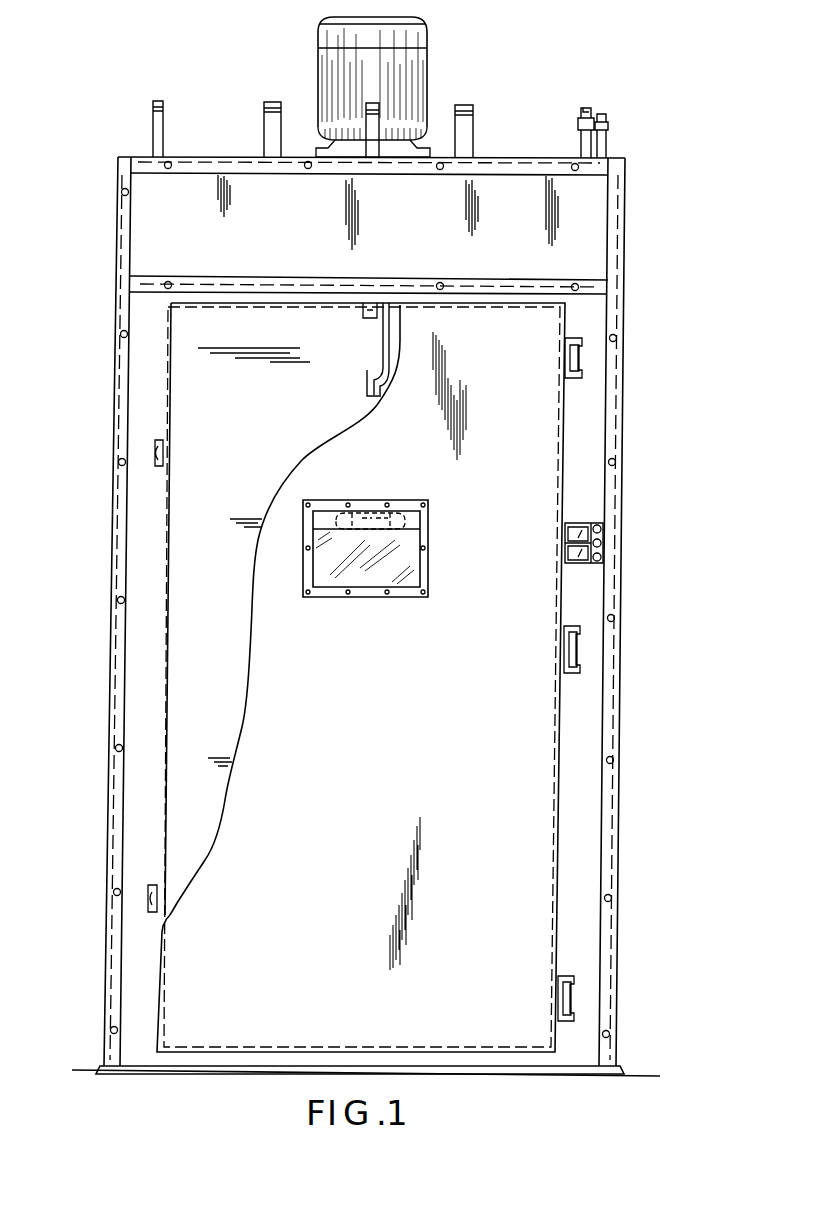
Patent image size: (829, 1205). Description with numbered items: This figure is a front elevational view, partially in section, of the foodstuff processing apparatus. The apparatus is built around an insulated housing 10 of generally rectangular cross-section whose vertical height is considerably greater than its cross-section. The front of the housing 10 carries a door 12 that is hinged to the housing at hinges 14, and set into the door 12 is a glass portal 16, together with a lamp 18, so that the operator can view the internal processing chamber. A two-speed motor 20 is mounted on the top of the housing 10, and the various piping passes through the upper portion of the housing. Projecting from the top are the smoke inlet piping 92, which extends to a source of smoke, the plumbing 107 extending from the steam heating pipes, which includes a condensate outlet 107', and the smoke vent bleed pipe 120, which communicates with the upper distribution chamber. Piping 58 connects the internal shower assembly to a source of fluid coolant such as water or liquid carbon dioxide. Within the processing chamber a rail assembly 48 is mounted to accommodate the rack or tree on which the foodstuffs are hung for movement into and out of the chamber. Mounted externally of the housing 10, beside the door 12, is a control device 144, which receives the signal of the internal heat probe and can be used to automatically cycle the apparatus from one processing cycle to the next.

The housing 10 is at (645, 447).
The door 12 is at (545, 746).
The hinge 14 is at (580, 358).
The glass portal 16 is at (410, 577).
The lamp 18 is at (372, 511).
The two-speed motor 20 is at (427, 42).
The rail assembly 48 is at (383, 344).
The piping 58 is at (591, 112).
The smoke inlet piping 92 is at (264, 118).
The plumbing 107 is at (514, 109).
The condensate outlet 107' is at (125, 129).
The smoke vent bleed pipe 120 is at (473, 122).
The control device 144 is at (604, 541).